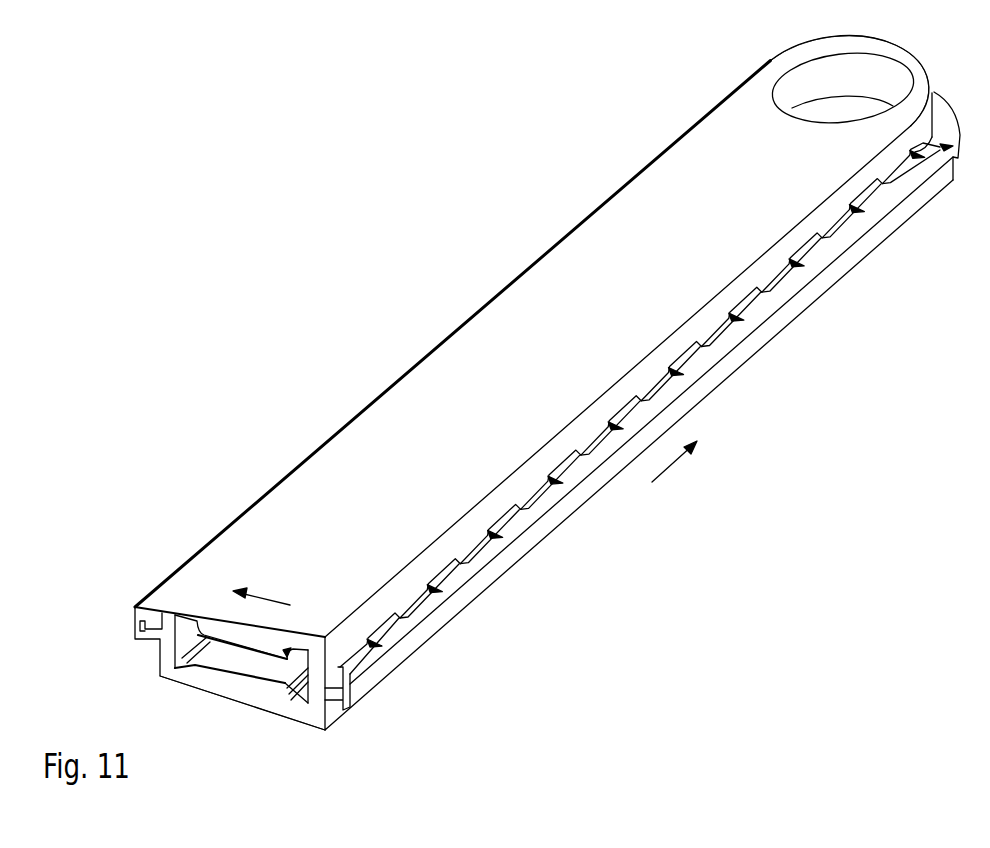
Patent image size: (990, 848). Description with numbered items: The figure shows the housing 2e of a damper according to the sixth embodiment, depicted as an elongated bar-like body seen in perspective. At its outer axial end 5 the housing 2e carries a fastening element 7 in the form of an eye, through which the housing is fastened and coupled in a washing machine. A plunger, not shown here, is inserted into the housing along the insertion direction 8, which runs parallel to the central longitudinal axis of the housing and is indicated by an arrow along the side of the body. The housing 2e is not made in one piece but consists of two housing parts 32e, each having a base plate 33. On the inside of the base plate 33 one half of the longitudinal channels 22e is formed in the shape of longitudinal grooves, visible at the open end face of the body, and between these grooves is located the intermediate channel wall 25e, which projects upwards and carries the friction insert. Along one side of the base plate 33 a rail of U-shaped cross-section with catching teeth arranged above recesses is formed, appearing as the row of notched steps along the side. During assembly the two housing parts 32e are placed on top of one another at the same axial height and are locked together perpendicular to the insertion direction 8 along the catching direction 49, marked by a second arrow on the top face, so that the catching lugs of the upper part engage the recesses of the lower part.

The housing 2e is at (460, 318).
The outer axial end 5 is at (772, 58).
The fastening element 7 is at (805, 78).
The insertion direction 8 is at (700, 472).
The longitudinal channels 22e is at (183, 672).
The intermediate channel wall 25e is at (240, 665).
The housing parts 32e is at (270, 518).
The base plate 33 is at (257, 699).
The catching direction 49 is at (258, 580).